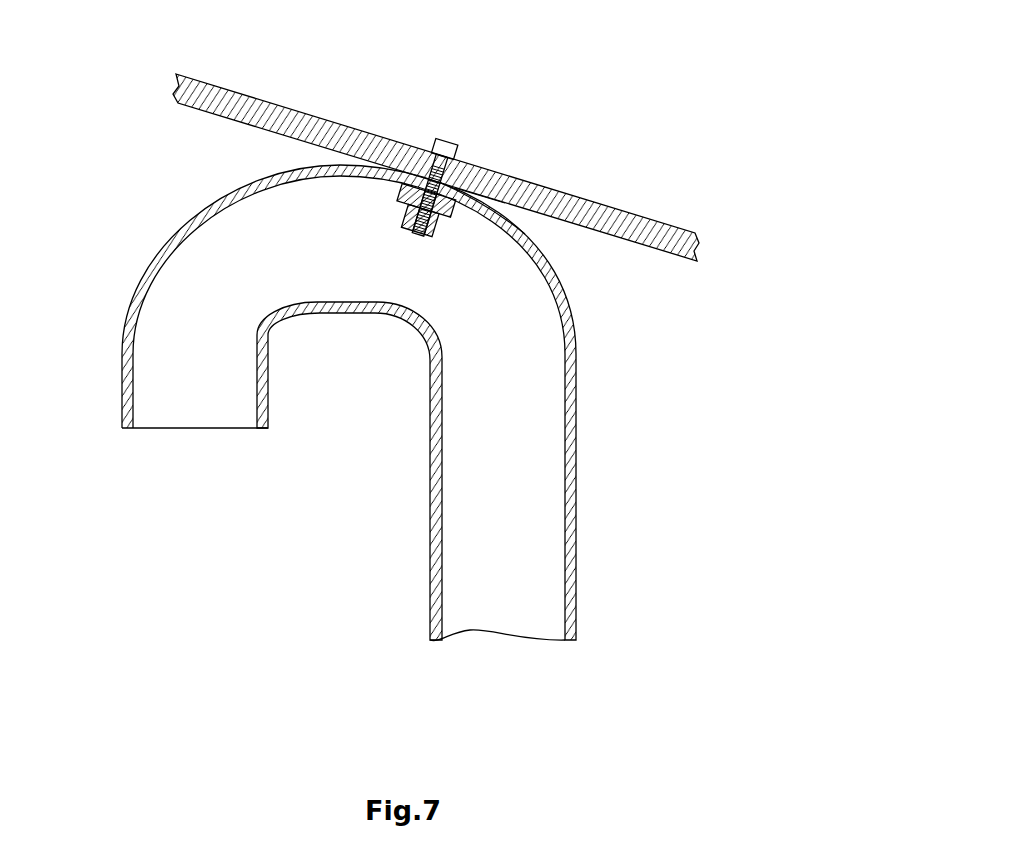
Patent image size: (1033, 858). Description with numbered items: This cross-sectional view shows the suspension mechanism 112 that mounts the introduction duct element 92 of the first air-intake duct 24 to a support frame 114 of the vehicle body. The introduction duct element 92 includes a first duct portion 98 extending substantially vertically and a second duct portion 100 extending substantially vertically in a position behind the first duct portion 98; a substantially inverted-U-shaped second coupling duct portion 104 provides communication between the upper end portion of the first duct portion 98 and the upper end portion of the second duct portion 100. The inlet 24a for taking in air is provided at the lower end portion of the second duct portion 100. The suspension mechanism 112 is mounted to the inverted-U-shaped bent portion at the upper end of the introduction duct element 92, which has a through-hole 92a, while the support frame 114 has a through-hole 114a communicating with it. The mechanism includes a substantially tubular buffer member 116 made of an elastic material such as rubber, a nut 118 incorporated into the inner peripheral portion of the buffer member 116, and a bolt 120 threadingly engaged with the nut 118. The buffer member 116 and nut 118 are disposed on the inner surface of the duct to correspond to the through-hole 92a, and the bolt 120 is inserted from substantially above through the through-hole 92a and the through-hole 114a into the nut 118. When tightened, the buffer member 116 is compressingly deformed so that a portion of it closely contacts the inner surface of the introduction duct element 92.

The first air-intake duct 24 is at (586, 582).
The inlet 24a is at (200, 429).
The introduction duct element 92 is at (587, 479).
The through-hole 92a is at (484, 186).
The first duct portion 98 is at (580, 408).
The second duct portion 100 is at (121, 393).
The second coupling duct portion 104 is at (188, 207).
The suspension mechanism 112 is at (467, 134).
The support frame 114 is at (646, 230).
The through-hole 114a is at (483, 187).
The buffer member 116 is at (398, 217).
The nut 118 is at (440, 243).
The bolt 120 is at (439, 142).